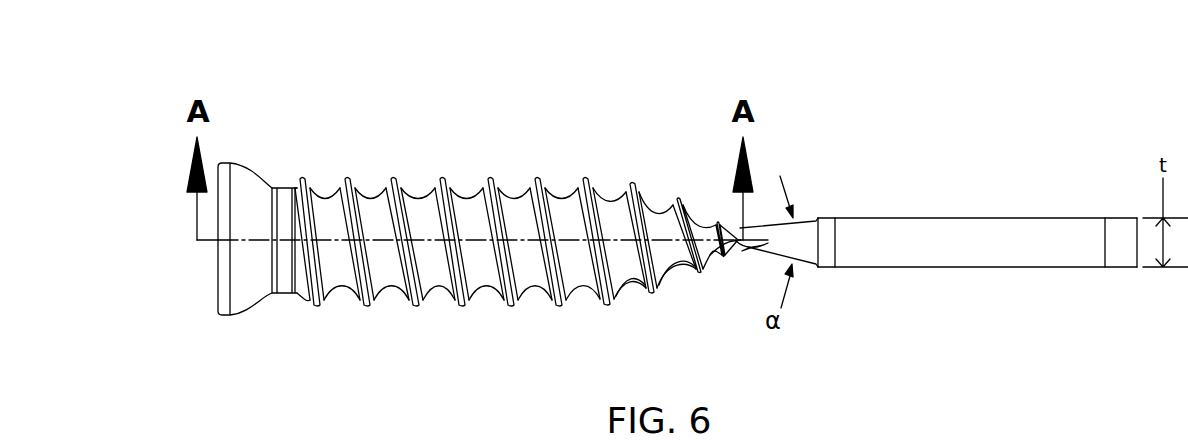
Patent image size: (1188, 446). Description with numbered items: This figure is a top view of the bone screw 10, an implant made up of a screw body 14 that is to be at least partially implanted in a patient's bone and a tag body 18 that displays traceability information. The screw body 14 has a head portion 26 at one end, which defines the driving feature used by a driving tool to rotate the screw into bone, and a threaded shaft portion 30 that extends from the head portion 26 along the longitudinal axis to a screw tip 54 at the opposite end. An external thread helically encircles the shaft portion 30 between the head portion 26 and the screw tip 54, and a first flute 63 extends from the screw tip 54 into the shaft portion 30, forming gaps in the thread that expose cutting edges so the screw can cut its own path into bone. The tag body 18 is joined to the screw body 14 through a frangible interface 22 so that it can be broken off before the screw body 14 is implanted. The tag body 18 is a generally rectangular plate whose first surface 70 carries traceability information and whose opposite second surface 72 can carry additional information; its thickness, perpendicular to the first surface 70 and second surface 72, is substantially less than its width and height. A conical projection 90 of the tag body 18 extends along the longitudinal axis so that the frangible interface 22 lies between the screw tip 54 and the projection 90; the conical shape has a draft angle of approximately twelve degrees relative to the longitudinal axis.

The bone screw 10 is at (350, 77).
The screw body 14 is at (513, 141).
The tag body 18 is at (1089, 138).
The frangible interface 22 is at (735, 230).
The head portion 26 is at (232, 329).
The threaded shaft portion 30 is at (490, 301).
The screw tip 54 is at (739, 274).
The first flute 63 is at (675, 292).
The first surface 70 is at (905, 268).
The second surface 72 is at (972, 215).
The projection 90 is at (800, 219).